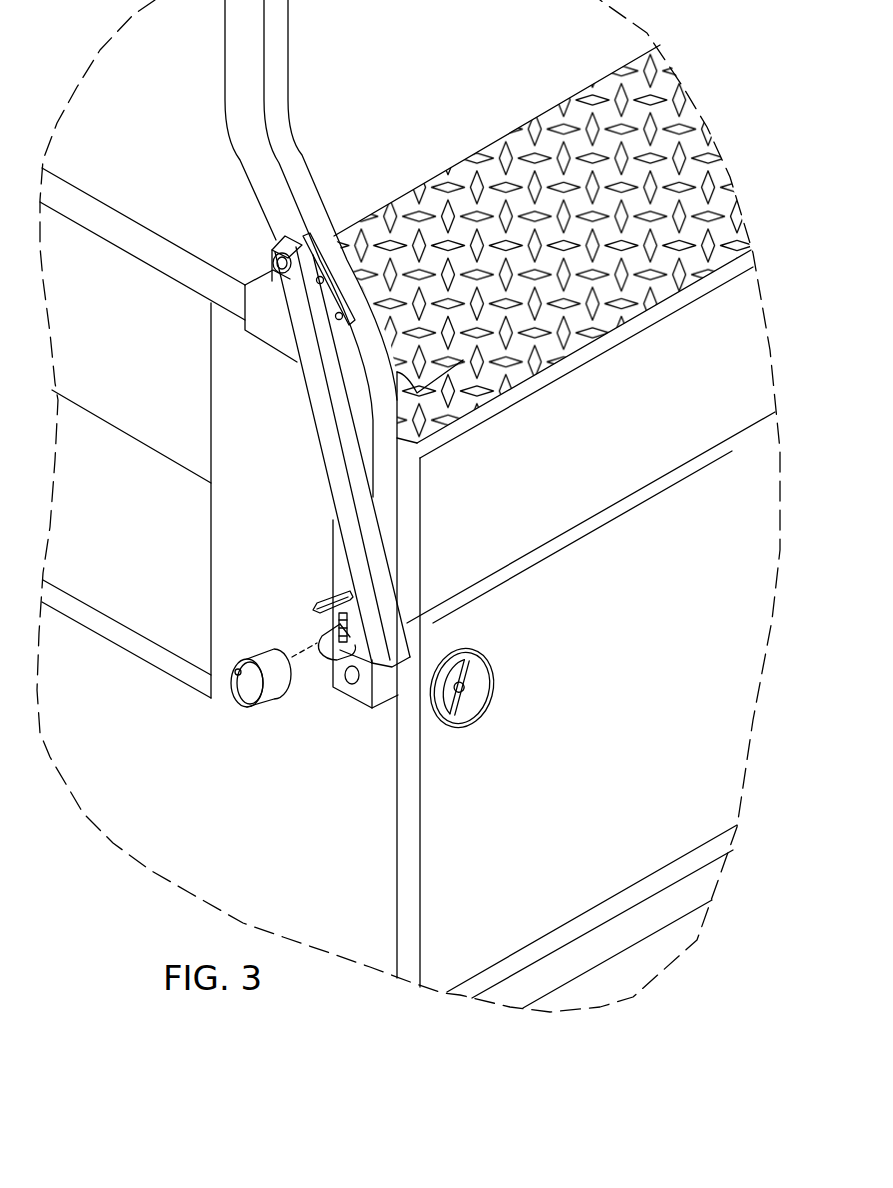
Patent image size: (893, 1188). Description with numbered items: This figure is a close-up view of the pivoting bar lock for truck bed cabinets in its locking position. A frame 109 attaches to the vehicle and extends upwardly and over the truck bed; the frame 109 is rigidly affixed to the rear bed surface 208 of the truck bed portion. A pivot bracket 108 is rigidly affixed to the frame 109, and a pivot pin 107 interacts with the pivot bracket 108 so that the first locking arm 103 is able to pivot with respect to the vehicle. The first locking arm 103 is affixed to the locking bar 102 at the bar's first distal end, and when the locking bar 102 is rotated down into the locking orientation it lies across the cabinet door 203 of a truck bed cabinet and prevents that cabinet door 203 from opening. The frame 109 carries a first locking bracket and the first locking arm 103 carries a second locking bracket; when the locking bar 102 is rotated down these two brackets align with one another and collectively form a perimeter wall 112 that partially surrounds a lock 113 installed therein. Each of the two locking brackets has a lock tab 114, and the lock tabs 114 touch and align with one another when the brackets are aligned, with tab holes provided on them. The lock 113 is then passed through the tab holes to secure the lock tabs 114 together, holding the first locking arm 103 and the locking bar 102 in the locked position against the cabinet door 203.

The locking bar 102 is at (582, 548).
The first locking arm 103 is at (335, 455).
The pivot pin 107 is at (275, 262).
The pivot bracket 108 is at (333, 302).
The frame 109 is at (297, 177).
The perimeter wall 112 is at (340, 568).
The lock 113 is at (250, 660).
The lock tab 114 is at (330, 645).
The cabinet door 203 is at (557, 817).
The rear bed surface 208 is at (187, 870).